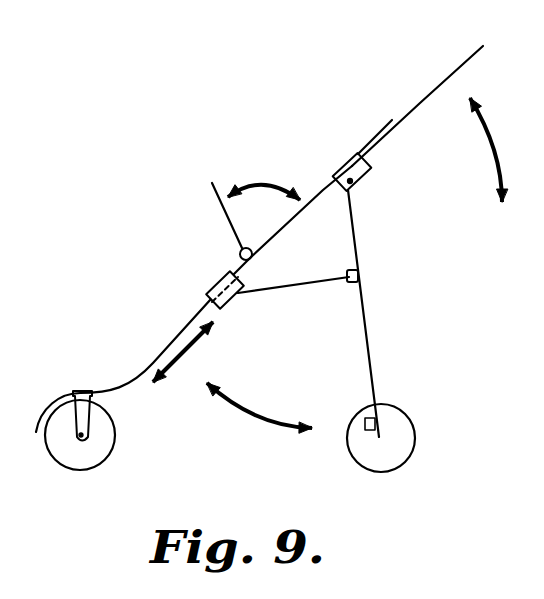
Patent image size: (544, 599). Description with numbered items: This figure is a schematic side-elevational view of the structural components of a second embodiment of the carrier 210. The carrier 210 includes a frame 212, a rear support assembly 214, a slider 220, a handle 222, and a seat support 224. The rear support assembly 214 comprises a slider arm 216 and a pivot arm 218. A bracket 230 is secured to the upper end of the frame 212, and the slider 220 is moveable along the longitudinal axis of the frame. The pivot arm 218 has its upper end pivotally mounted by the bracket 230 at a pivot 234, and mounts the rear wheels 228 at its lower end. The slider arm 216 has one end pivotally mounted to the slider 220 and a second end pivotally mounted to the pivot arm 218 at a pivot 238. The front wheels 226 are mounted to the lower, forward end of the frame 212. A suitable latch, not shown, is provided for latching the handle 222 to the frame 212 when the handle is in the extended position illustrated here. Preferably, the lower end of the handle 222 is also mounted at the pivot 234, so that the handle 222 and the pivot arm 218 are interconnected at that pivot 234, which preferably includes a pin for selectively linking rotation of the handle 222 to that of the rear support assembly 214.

The carrier 210 is at (177, 220).
The frame 212 is at (322, 190).
The rear support assembly 214 is at (389, 340).
The slider arm 216 is at (308, 278).
The pivot arm 218 is at (355, 224).
The slider 220 is at (212, 284).
The handle 222 is at (452, 77).
The seat support 224 is at (212, 183).
The front wheels 226 is at (115, 452).
The rear wheels 228 is at (415, 425).
The bracket 230 is at (356, 160).
The pivot 234 is at (352, 181).
The pivot 238 is at (360, 276).